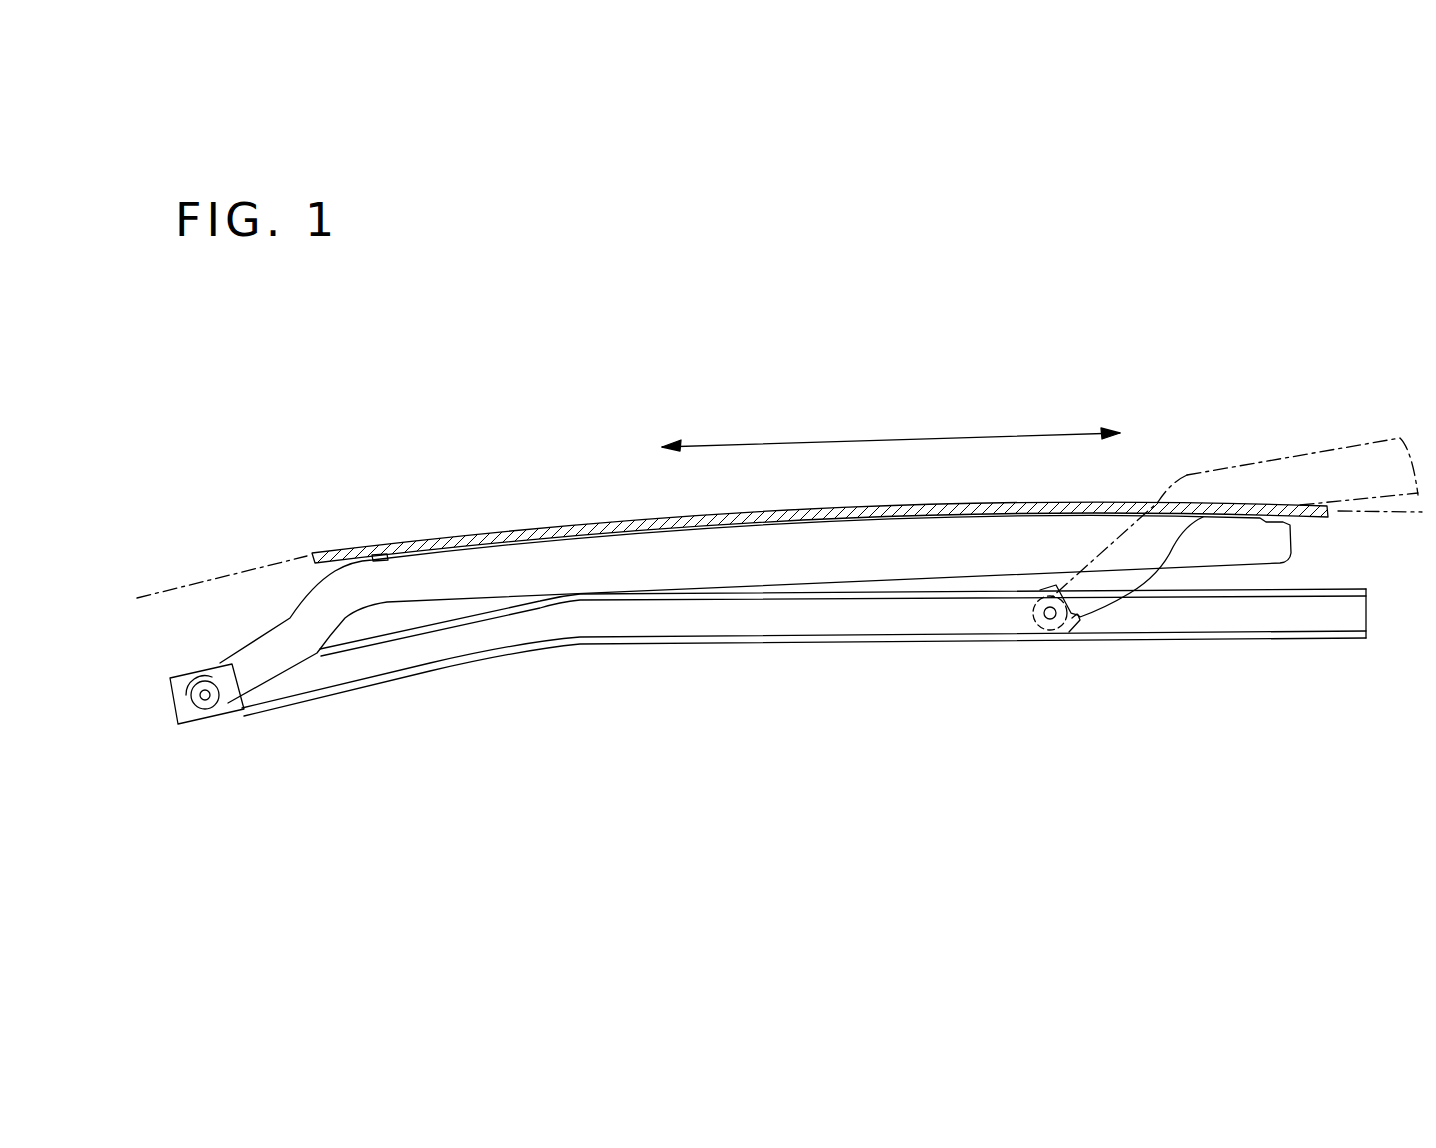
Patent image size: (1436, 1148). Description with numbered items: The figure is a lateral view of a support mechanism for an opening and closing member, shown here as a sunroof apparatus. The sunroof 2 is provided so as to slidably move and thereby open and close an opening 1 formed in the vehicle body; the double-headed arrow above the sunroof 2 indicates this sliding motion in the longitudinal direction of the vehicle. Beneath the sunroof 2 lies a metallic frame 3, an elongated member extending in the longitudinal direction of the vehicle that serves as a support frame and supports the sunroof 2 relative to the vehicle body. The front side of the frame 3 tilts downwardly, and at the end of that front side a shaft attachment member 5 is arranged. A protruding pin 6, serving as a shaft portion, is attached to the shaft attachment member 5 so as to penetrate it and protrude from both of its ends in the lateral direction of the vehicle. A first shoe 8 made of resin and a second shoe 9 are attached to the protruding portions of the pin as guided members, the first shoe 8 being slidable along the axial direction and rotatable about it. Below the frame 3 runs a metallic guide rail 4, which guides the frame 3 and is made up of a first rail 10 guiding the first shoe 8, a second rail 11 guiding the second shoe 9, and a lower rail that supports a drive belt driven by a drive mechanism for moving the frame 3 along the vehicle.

The opening 1 is at (462, 436).
The sunroof 2 is at (637, 518).
The frame 3 is at (602, 567).
The guide rail 4 is at (872, 638).
The shaft attachment member 5 is at (204, 671).
The protruding pin 6 is at (205, 722).
The first shoe 8 is at (222, 714).
The second shoe 9 is at (629, 652).
The first rail 10 is at (843, 622).
The second rail 11 is at (804, 673).